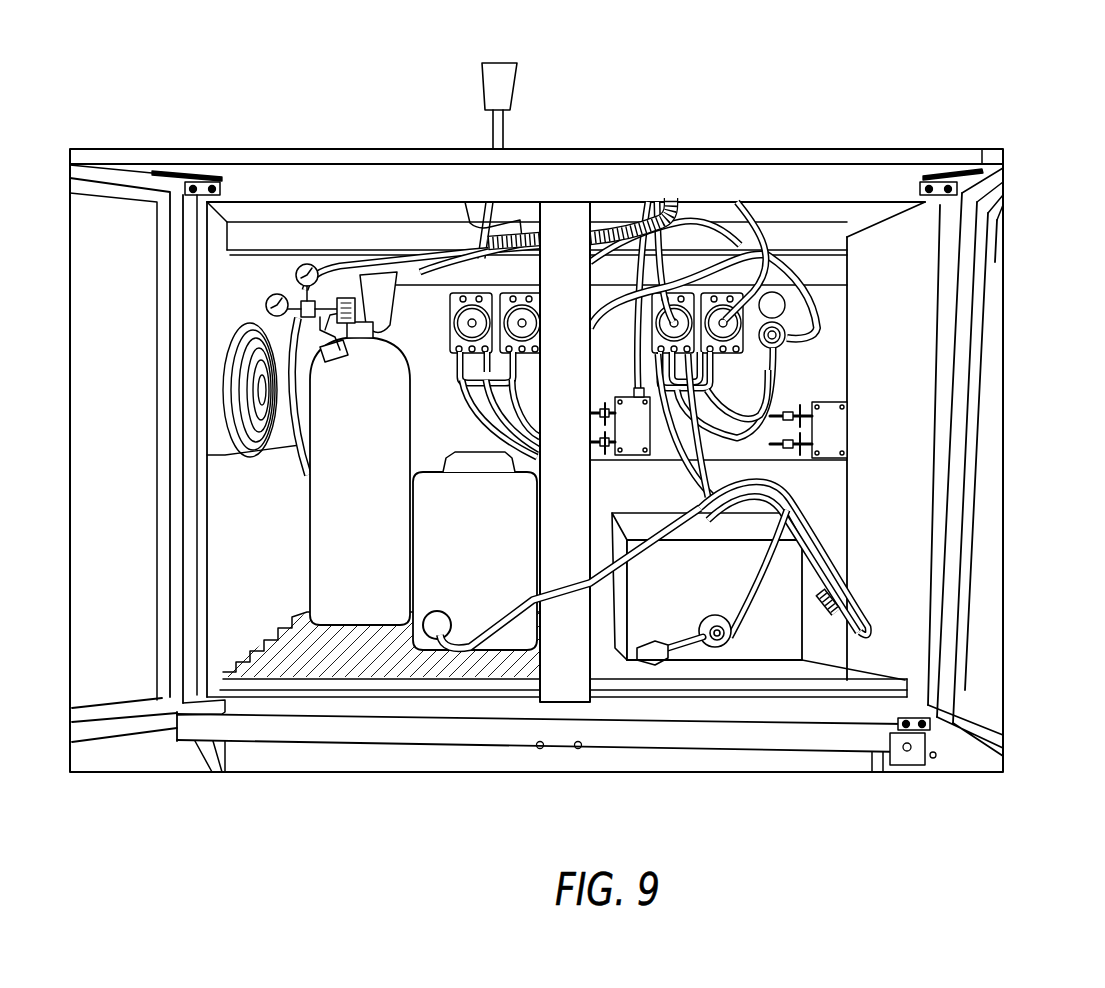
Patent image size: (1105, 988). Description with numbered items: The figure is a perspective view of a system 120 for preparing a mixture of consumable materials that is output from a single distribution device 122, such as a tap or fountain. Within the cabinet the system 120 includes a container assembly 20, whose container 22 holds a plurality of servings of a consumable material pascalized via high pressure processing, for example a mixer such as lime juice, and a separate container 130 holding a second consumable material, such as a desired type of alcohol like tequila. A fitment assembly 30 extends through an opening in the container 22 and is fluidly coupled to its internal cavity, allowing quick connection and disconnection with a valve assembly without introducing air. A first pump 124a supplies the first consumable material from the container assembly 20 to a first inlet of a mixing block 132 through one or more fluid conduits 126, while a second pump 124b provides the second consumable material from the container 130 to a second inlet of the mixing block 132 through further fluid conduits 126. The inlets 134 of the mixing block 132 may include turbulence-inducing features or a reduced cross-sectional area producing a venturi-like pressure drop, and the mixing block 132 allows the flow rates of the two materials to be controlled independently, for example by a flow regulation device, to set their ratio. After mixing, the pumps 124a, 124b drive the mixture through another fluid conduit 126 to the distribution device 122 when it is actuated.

The container assembly 20 is at (785, 626).
The container 22 is at (727, 583).
The fitment assembly 30 is at (730, 650).
The system 120 is at (984, 104).
The distribution device 122 is at (507, 80).
The first pump 124a is at (736, 200).
The second pump 124b is at (656, 205).
The fluid conduit 126 is at (790, 505).
The container 130 is at (462, 527).
The mixing block 132 is at (840, 437).
The inlets 134 is at (848, 417).